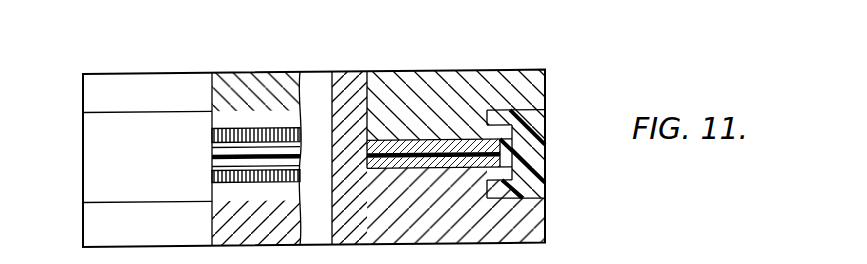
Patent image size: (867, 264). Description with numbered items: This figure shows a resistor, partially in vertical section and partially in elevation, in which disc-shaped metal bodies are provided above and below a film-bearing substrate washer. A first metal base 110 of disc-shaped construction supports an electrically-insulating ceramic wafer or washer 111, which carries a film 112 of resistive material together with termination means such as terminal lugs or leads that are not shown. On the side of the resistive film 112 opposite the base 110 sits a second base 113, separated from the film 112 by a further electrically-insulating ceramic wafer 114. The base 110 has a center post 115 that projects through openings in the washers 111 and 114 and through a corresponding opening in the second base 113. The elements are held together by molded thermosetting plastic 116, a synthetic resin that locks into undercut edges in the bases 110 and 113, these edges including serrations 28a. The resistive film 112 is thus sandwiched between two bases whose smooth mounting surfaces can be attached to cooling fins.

The first metal base 110 is at (396, 240).
The electrically-insulating wafer 111 is at (368, 166).
The film of resistive material 112 is at (368, 148).
The second base 113 is at (422, 71).
The electrically-insulating wafer 114 is at (545, 136).
The center post 115 is at (345, 72).
The molded thermosetting plastic 116 is at (92, 150).
The serrations 28a is at (213, 131).